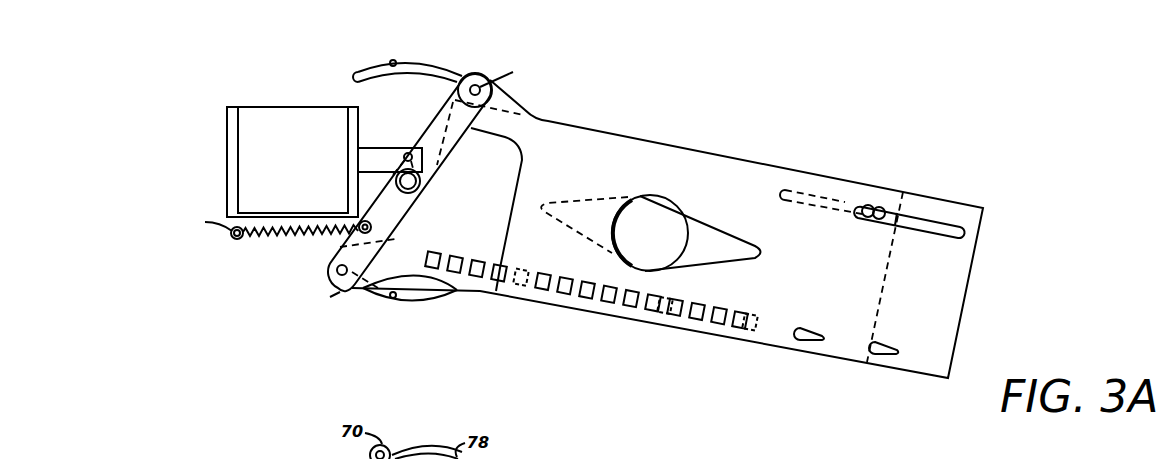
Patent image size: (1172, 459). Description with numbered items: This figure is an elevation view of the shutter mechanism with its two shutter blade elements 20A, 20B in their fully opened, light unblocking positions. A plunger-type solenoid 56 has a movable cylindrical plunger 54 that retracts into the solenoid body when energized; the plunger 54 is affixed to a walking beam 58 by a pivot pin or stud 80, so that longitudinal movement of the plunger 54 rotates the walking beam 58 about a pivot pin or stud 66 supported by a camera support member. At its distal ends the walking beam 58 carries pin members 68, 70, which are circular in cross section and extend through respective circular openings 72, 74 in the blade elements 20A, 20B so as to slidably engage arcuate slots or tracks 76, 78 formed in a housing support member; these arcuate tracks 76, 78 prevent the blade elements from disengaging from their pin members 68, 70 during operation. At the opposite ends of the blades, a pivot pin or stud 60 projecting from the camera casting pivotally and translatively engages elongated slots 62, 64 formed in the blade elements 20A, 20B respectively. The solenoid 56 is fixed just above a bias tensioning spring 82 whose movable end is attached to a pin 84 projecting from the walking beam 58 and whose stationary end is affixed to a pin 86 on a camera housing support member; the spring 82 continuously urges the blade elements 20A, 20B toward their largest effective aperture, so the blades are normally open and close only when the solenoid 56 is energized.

The shutter blade element 20A is at (729, 156).
The shutter blade element 20B is at (478, 289).
The plunger 54 is at (401, 147).
The solenoid 56 is at (279, 113).
The walking beam 58 is at (400, 207).
The pivot pin 60 is at (873, 218).
The elongated slot 62 is at (907, 223).
The elongated slot 64 is at (826, 190).
The pivot pin 66 is at (420, 184).
The pin member 68 is at (336, 265).
The pin member 70 is at (482, 73).
The circular opening 72 is at (348, 286).
The circular opening 74 is at (509, 74).
The arcuate track 76 is at (405, 300).
The arcuate track 78 is at (398, 62).
The pivot pin 80 is at (412, 152).
The bias tensioning spring 82 is at (268, 240).
The pin 84 is at (360, 222).
The pin 86 is at (206, 222).